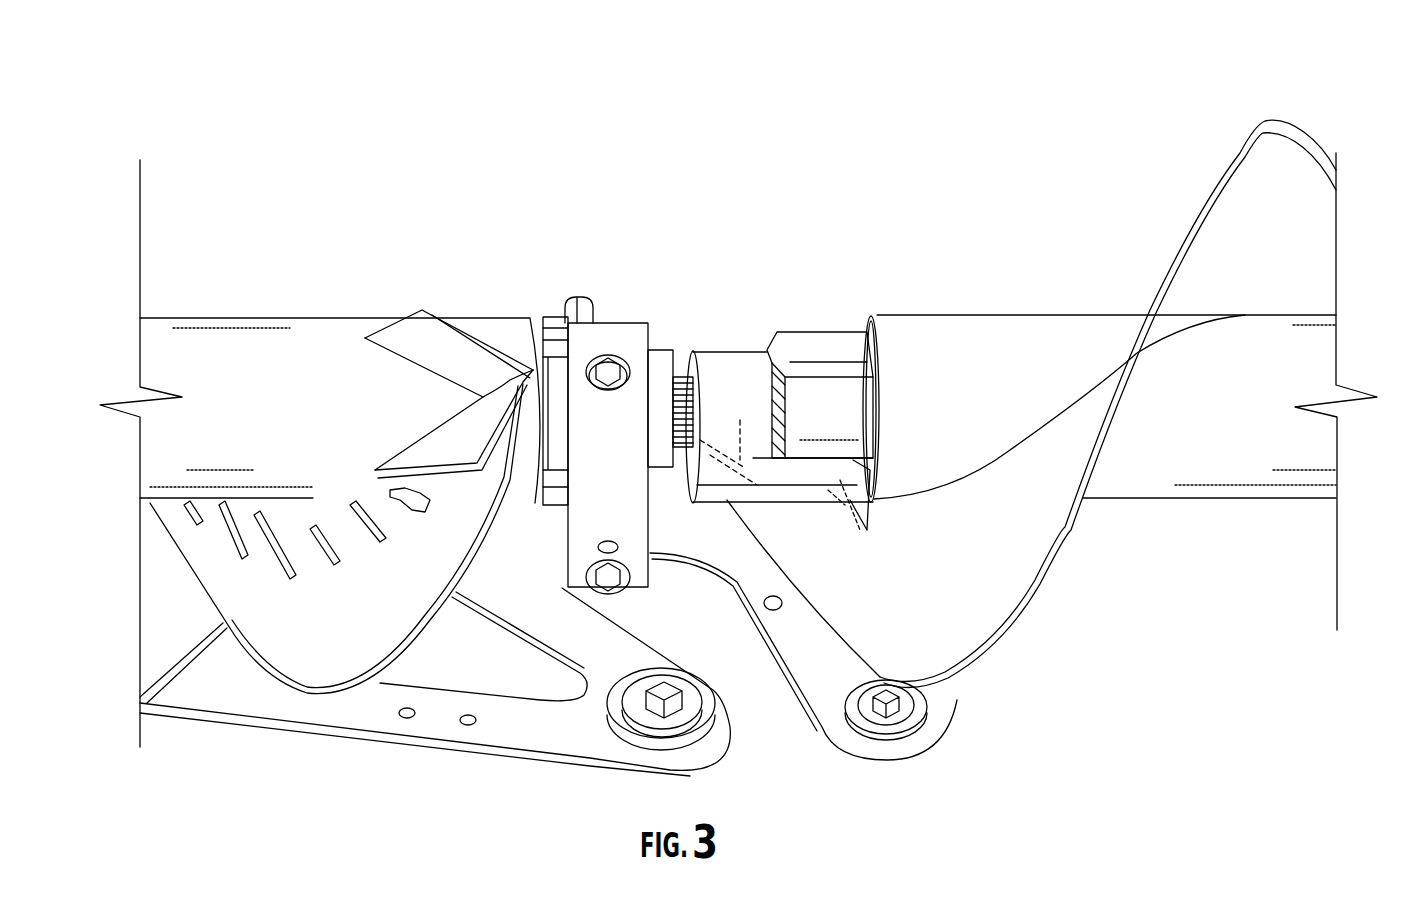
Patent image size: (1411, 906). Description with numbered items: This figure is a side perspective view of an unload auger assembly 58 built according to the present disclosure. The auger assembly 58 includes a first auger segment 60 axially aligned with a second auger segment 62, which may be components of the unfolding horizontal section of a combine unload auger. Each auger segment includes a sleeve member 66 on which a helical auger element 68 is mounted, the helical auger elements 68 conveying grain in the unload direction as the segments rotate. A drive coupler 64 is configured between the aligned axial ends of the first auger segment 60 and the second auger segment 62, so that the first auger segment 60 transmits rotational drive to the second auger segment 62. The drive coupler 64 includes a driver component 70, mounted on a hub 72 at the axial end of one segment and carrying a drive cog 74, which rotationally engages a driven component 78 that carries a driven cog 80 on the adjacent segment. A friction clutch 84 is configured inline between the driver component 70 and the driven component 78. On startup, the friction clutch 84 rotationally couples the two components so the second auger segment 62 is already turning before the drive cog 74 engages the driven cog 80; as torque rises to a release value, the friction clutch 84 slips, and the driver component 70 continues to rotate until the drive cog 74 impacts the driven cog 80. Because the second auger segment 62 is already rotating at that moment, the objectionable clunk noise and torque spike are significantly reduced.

The unload auger assembly 58 is at (1082, 98).
The first auger segment 60 is at (360, 222).
The second auger segment 62 is at (1060, 248).
The drive coupler 64 is at (636, 264).
The sleeve member 66 is at (318, 345).
The helical auger element 68 is at (318, 672).
The driver component 70 is at (728, 483).
The hub 72 is at (660, 380).
The drive cog 74 is at (807, 487).
The driven component 78 is at (860, 422).
The driven cog 80 is at (850, 330).
The friction clutch 84 is at (766, 398).